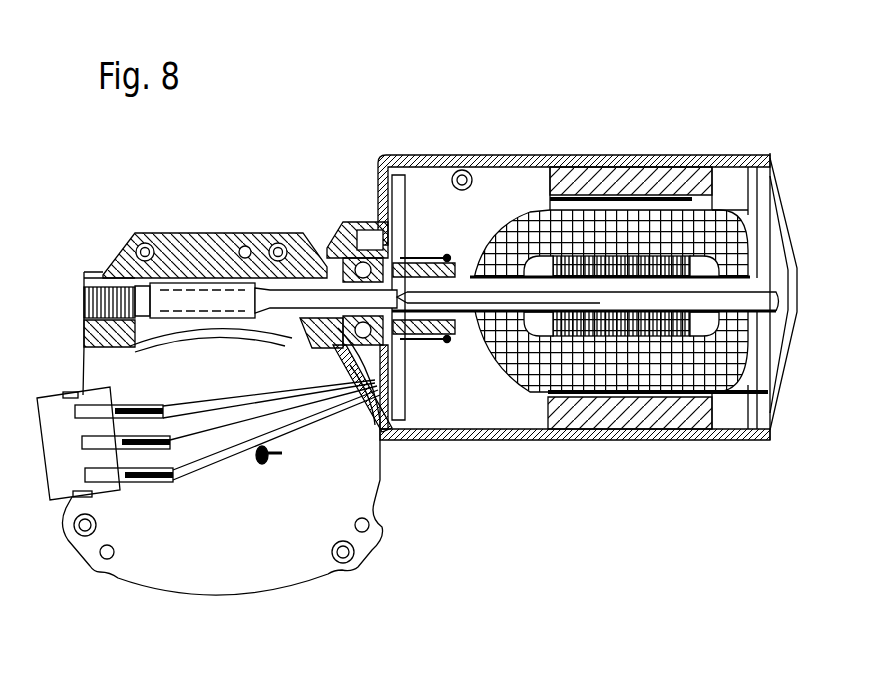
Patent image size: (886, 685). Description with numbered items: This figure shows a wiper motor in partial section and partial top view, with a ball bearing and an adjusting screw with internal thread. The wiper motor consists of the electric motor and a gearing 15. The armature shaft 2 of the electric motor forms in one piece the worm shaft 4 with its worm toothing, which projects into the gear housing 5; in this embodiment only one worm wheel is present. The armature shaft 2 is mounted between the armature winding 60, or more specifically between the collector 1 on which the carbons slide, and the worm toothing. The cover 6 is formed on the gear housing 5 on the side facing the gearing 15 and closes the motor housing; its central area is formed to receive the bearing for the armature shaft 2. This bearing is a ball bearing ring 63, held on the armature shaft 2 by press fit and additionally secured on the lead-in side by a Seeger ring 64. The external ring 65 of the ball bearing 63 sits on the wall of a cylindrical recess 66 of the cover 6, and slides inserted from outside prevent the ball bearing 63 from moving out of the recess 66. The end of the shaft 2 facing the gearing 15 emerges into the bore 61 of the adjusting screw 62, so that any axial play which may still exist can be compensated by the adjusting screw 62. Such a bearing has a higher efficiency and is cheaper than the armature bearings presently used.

The collector 1 is at (448, 340).
The armature shaft 2 is at (448, 260).
The worm shaft 4 is at (317, 298).
The gear housing 5 is at (222, 244).
The cover 6 is at (383, 157).
The gearing 15 is at (158, 242).
The armature winding 60 is at (537, 378).
The bore 61 is at (157, 328).
The adjusting screw 62 is at (94, 278).
The ball bearing ring 63 is at (397, 437).
The Seeger ring 64 is at (343, 236).
The external ring 65 is at (413, 262).
The cylindrical recess 66 is at (414, 338).